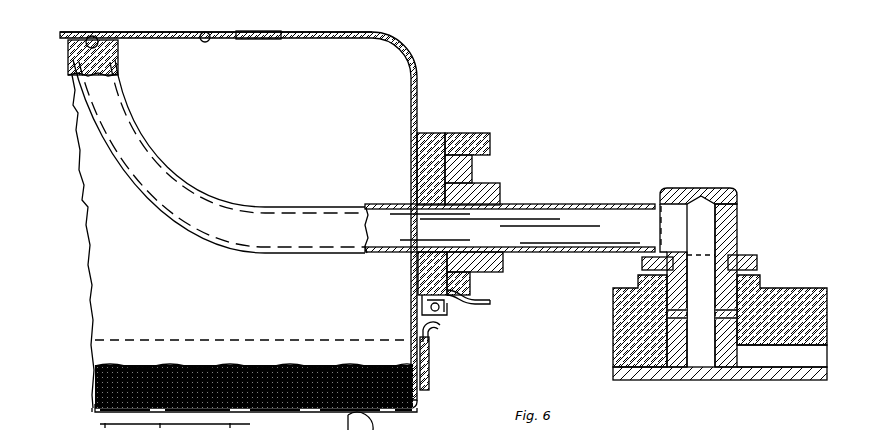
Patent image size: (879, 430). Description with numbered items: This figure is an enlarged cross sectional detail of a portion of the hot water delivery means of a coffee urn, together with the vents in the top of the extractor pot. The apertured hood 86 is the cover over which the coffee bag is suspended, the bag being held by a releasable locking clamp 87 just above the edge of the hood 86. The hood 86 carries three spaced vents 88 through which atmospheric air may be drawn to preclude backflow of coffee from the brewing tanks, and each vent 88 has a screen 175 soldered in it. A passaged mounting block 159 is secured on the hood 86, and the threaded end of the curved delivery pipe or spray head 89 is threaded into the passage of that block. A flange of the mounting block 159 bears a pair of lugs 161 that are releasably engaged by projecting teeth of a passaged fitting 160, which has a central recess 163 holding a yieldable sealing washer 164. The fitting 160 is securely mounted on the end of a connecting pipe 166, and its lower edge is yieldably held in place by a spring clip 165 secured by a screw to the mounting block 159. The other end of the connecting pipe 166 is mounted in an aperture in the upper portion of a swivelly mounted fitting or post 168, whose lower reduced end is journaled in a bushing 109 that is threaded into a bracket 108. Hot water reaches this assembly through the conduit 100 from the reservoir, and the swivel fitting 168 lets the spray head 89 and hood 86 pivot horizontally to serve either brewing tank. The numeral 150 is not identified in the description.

The hood 86 is at (418, 77).
The vents 88 is at (286, 33).
The screen 175 is at (250, 31).
The spray head 89 is at (118, 124).
The connecting pipe 166 is at (618, 204).
The mounting block 159 is at (466, 108).
The lugs 161 is at (490, 150).
The fitting 160 is at (500, 188).
The central recess 163 is at (478, 268).
The sealing washer 164 is at (478, 292).
The spring clip 165 is at (448, 300).
The locking clamp 87 is at (430, 372).
The swivelly mounted fitting 168 is at (680, 188).
The bushing 109 is at (757, 262).
The bracket 108 is at (766, 290).
The conduit 100 is at (718, 368).
The element 150 is at (405, 424).